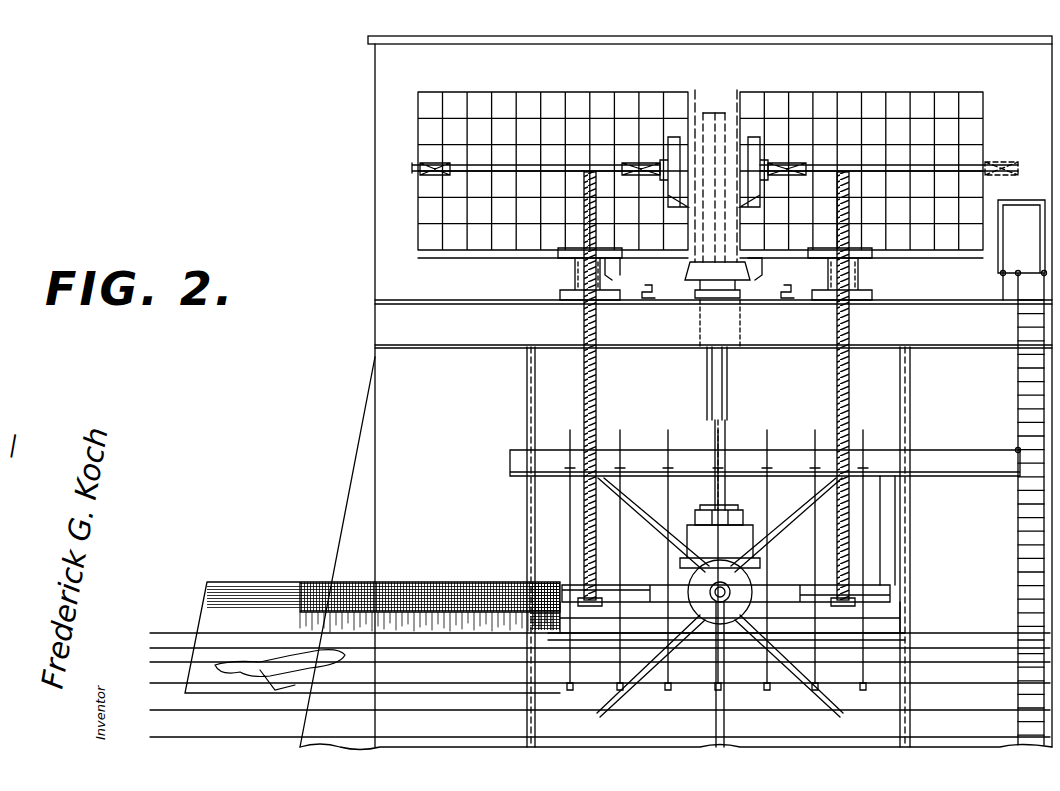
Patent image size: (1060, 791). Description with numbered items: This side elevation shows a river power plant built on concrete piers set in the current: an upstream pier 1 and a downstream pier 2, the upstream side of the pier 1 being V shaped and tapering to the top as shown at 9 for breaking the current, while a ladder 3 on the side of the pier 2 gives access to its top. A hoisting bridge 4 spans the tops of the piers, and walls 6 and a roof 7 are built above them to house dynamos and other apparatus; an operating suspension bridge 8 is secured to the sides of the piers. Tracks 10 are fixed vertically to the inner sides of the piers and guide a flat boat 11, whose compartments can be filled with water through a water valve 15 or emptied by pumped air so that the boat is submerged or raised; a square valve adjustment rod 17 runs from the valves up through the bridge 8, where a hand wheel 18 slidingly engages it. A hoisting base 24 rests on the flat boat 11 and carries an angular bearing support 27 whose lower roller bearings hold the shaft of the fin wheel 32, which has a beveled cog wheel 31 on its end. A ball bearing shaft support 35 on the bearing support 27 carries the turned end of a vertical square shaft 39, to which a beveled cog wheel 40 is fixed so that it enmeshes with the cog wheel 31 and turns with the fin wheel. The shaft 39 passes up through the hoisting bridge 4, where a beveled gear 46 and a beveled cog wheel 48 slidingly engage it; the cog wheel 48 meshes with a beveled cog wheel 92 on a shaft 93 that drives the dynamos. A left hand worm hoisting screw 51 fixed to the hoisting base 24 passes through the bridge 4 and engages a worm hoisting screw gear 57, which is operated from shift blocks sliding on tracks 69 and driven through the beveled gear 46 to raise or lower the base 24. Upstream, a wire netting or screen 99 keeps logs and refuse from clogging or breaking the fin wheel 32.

The upstream pier 1 is at (395, 400).
The downstream pier 2 is at (601, 668).
The ladder 3 is at (1020, 536).
The hoisting bridge 4 is at (770, 335).
The wall 6 is at (382, 236).
The roof 7 is at (594, 40).
The operating suspension bridge 8 is at (960, 478).
The V-shaped upstream side 9 is at (358, 536).
The track 10 is at (526, 405).
The flat boat 11 is at (795, 680).
The water valve 15 is at (668, 690).
The square valve adjustment rod 17 is at (620, 553).
The hand wheel 18 is at (570, 462).
The hoisting base 24 is at (870, 605).
The angular bearing support 27 is at (742, 535).
The cog wheel 31 is at (752, 584).
The fin wheel 32 is at (765, 522).
The ball bearing shaft support 35 is at (700, 518).
The square shaft 39 is at (710, 385).
The beveled cog wheel 40 is at (745, 565).
The beveled gear 46 is at (697, 288).
The beveled cog wheel 48 is at (716, 169).
The left hand worm hoisting screw 51 is at (597, 378).
The left hand worm hoisting screw gear 57 is at (570, 255).
The track 69 is at (718, 282).
The beveled cog wheel 92 is at (672, 140).
The shaft 93 is at (452, 170).
The wire netting or screen 99 is at (300, 590).